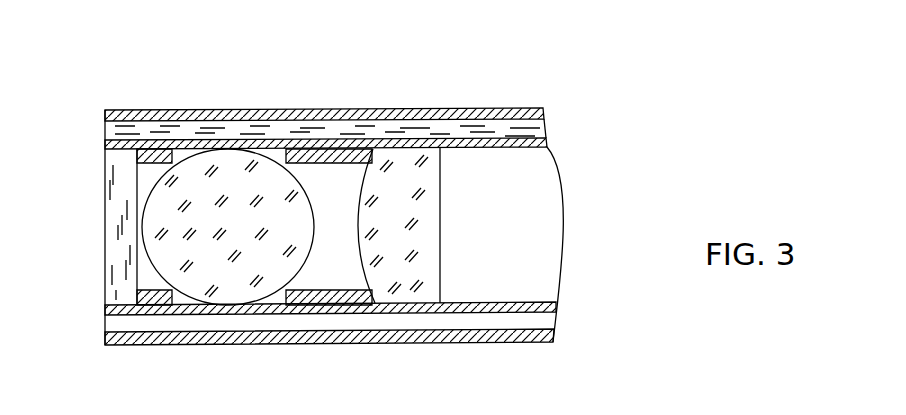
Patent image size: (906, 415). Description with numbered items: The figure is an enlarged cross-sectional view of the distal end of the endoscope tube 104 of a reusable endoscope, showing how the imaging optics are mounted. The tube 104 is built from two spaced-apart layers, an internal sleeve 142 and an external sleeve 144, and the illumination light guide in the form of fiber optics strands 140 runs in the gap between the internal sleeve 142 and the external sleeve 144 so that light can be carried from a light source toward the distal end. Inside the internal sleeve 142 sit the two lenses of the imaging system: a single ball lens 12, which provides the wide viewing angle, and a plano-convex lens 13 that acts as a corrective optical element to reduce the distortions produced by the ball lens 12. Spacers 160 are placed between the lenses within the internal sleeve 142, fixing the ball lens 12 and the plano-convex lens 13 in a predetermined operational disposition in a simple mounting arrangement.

The endoscope tube 104 is at (150, 90).
The ball lens 12 is at (208, 193).
The plano-convex lens 13 is at (408, 180).
The external sleeve 144 is at (490, 108).
The fiber optics strands 140 is at (520, 128).
The internal sleeve 142 is at (555, 153).
The spacers 160 is at (332, 297).